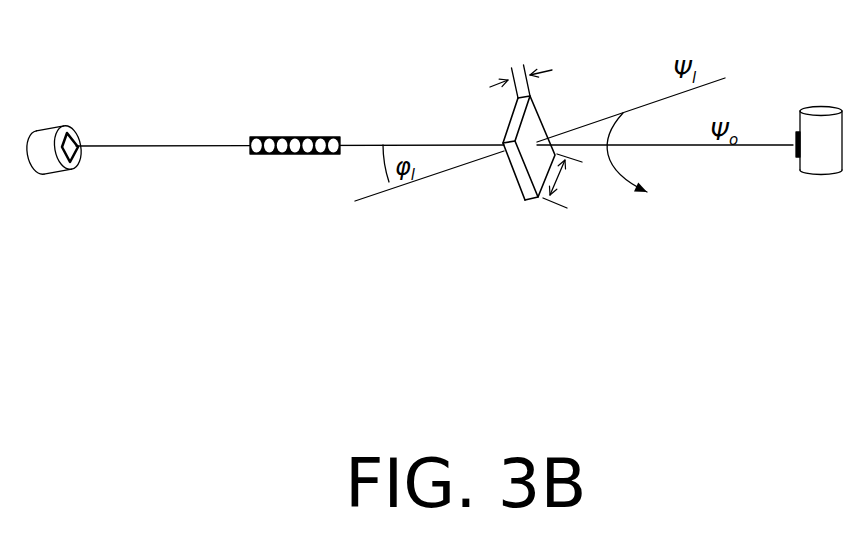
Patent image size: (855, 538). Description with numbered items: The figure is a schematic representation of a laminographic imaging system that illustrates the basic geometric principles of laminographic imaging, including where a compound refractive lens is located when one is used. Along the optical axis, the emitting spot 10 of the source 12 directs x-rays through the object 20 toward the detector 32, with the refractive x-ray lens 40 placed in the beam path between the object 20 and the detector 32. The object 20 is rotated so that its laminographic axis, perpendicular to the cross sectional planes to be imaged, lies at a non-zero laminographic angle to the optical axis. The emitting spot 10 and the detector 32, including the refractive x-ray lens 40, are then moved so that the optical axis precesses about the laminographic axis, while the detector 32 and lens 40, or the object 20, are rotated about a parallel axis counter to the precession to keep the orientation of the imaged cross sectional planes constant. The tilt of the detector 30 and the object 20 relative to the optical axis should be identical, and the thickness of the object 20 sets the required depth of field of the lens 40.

The emitting spot 10 is at (793, 147).
The source 12 is at (823, 107).
The object 20 is at (512, 193).
The detector 30 is at (76, 138).
The detector 32 is at (52, 183).
The refractive x-ray lens 40 is at (305, 128).